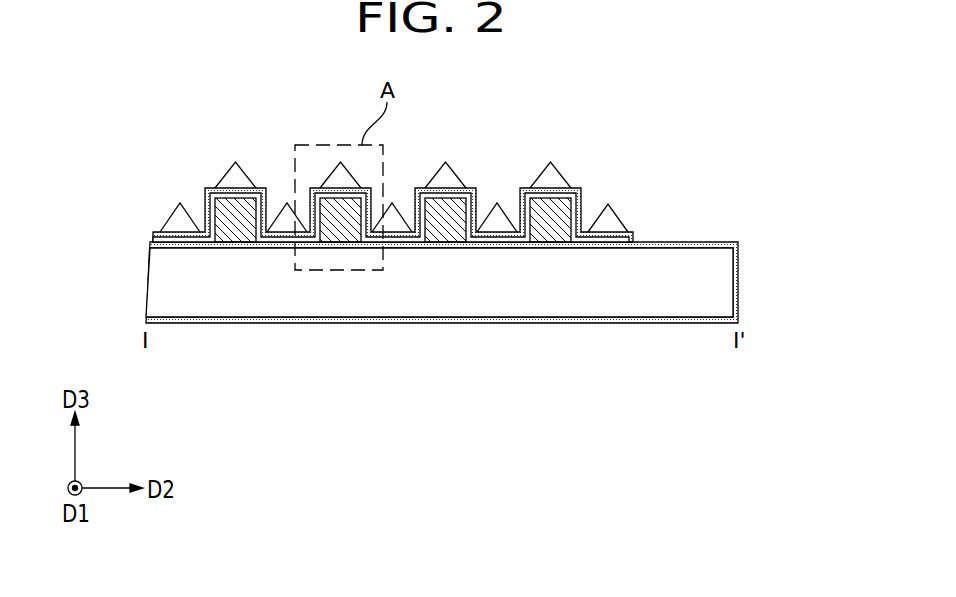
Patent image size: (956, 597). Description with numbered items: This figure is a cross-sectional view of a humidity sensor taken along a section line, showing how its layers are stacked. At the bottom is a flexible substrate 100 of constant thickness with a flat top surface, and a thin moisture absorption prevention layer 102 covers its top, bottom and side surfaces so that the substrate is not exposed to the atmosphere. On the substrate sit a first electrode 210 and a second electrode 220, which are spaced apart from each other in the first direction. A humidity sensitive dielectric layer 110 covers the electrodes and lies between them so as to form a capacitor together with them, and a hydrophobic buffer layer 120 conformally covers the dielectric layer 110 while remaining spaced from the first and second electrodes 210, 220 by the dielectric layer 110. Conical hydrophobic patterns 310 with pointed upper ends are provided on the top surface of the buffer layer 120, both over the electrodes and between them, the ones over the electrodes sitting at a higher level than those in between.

The substrate 100 is at (720, 297).
The moisture absorption prevention layer 102 is at (737, 267).
The dielectric layer 110 is at (634, 240).
The buffer layer 120 is at (634, 235).
The first electrode 210 is at (230, 233).
The second electrode 220 is at (343, 233).
The hydrophobic pattern 310 is at (608, 225).